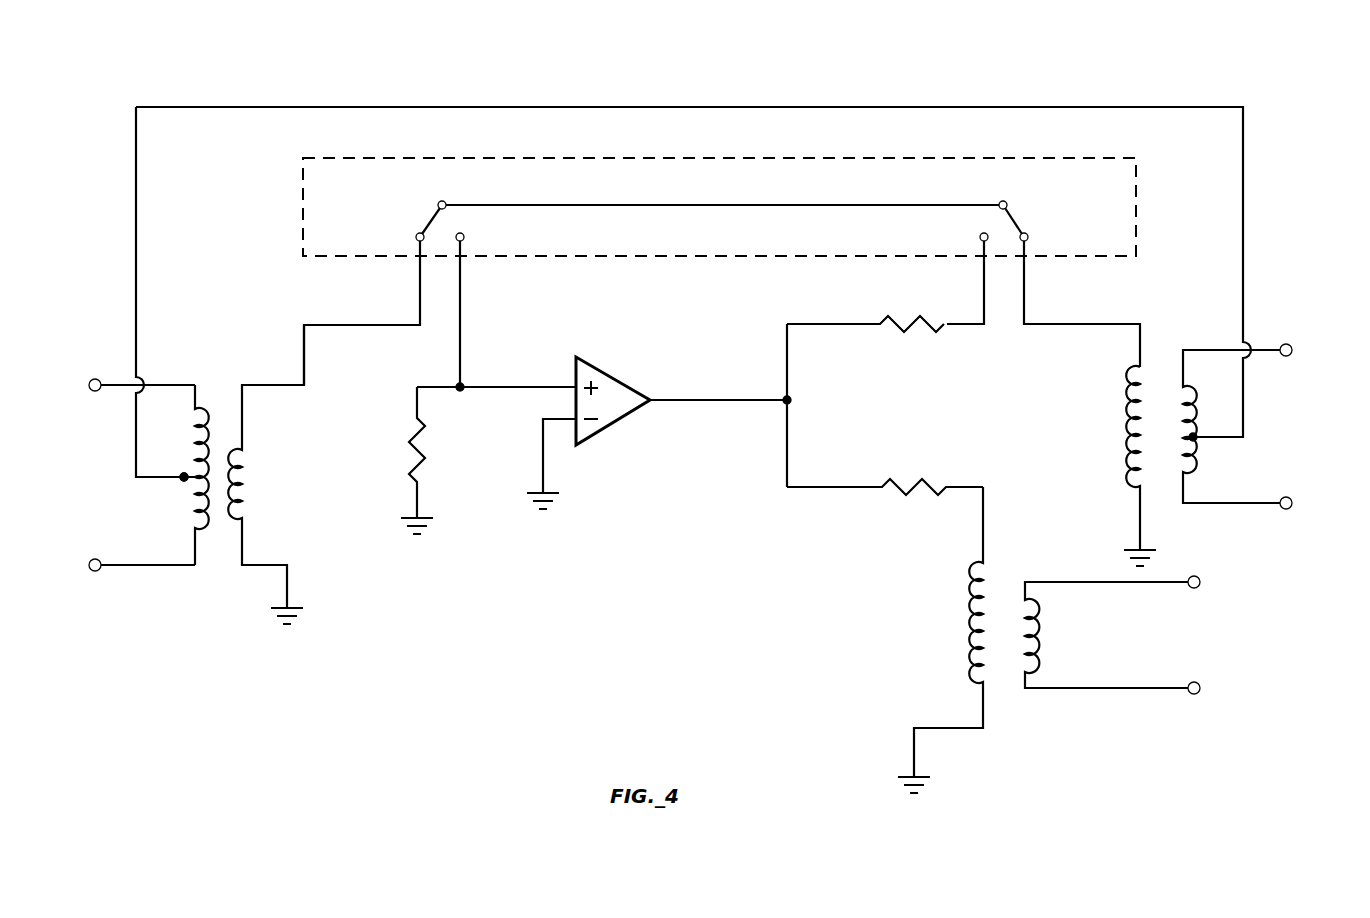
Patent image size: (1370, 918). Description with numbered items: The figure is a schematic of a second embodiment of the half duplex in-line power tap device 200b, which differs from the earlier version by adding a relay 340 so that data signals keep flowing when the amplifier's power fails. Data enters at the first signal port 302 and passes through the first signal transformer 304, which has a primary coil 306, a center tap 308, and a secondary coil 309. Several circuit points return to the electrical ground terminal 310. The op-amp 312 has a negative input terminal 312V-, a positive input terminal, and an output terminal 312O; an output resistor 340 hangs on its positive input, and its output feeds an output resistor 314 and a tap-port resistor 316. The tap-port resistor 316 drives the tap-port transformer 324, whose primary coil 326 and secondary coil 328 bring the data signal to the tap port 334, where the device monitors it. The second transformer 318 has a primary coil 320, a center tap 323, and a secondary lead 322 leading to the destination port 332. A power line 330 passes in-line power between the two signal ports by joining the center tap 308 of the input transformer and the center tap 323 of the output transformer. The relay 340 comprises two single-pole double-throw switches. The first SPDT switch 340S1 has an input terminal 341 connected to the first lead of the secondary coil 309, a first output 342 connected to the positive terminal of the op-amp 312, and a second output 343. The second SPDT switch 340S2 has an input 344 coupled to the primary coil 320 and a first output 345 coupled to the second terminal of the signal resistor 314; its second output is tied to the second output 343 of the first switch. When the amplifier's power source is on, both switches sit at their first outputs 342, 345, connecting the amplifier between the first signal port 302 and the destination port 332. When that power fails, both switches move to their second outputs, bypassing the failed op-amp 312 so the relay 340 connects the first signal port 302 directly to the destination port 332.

The in-line power tap device 200b is at (858, 72).
The first signal port 302 is at (95, 438).
The first signal transformer 304 is at (152, 385).
The primary coil 306 is at (195, 508).
The center tap 308 is at (167, 481).
The secondary coil 309 is at (245, 465).
The electrical ground terminal 310 is at (282, 608).
The op-amp 312 is at (620, 380).
The negative input terminal 312V- is at (560, 418).
The output terminal 312O is at (735, 405).
The output resistor 314 is at (928, 330).
The tap-port resistor 316 is at (912, 487).
The second transformer 318 is at (1138, 340).
The primary coil 320 is at (1140, 470).
The secondary lead 322 is at (1183, 460).
The center tap 323 is at (1218, 440).
The tap-port transformer 324 is at (980, 548).
The primary coil 326 is at (980, 668).
The secondary coil 328 is at (1035, 623).
The power line 330 is at (512, 107).
The destination port 332 is at (1283, 400).
The tap port 334 is at (1235, 625).
The relay 340 is at (715, 158).
The first SPDT switch 340S1 is at (430, 225).
The second SPDT switch 340S2 is at (1020, 222).
The input terminal 341 is at (418, 310).
The first output 342 is at (462, 305).
The second output 343 is at (462, 205).
The input 344 is at (982, 310).
The first output 345 is at (985, 205).